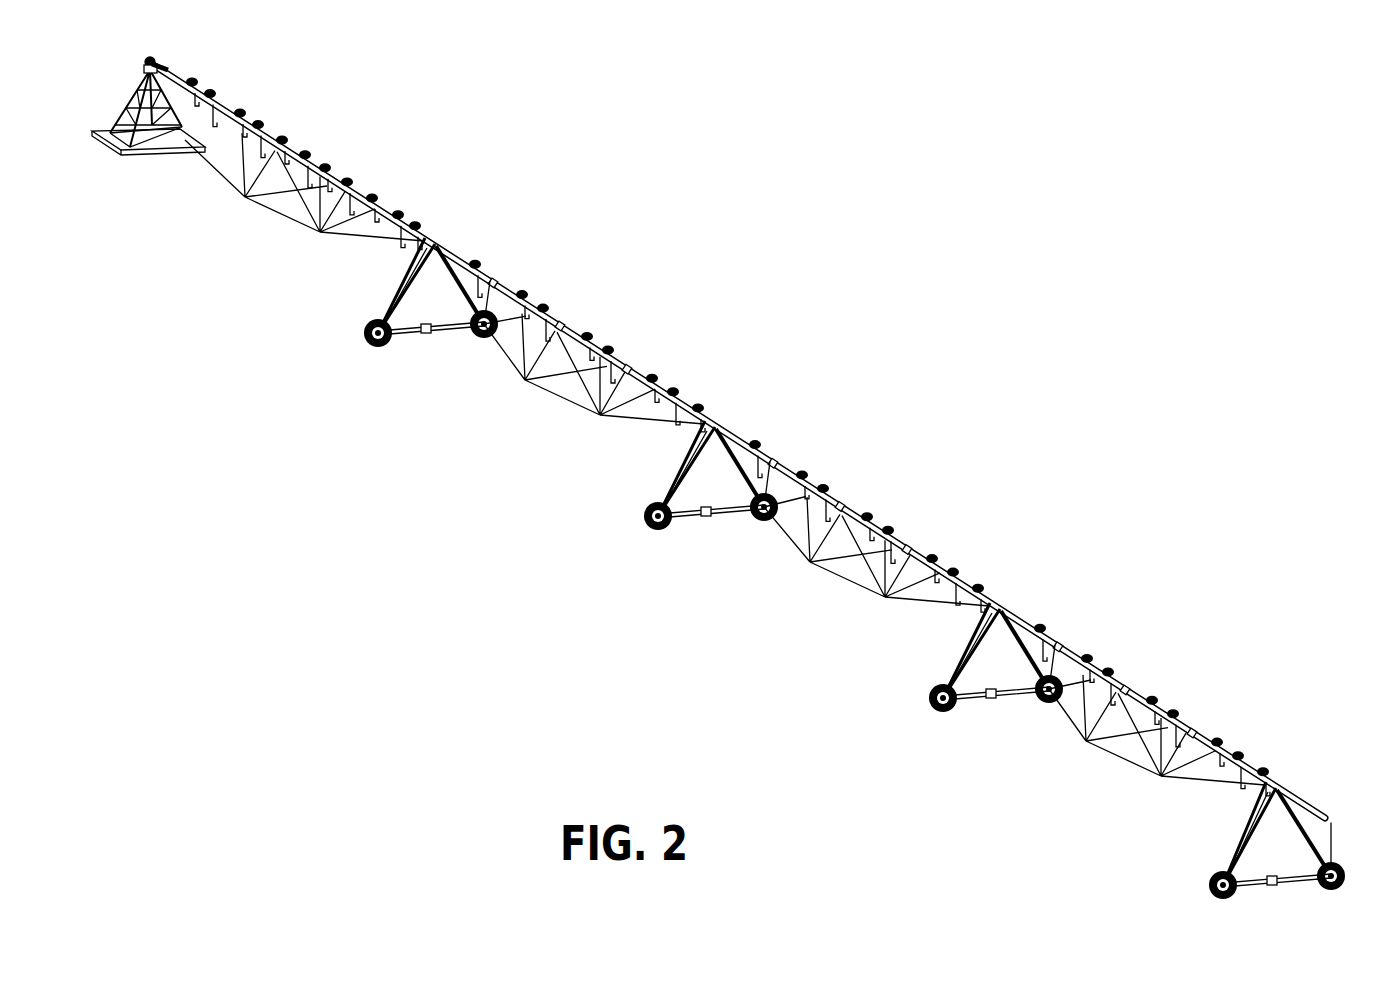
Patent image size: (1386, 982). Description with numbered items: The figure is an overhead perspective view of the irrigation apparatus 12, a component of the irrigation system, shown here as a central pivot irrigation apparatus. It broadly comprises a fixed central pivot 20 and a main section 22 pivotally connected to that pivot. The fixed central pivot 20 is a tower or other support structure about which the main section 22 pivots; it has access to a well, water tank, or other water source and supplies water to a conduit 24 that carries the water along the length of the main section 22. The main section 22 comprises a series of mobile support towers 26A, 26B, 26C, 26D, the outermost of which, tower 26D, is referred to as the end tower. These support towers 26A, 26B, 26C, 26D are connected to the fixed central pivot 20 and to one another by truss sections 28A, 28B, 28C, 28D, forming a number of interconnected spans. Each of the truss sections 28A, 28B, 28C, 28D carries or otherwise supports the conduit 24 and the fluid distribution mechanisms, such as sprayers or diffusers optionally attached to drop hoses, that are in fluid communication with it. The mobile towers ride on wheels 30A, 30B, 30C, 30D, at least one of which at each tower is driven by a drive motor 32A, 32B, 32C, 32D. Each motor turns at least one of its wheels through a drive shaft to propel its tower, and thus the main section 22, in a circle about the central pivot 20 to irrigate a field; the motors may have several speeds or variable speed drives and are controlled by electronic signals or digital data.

The irrigation apparatus 12 is at (852, 300).
The fixed central pivot 20 is at (122, 168).
The main section 22 is at (377, 150).
The conduit 24 is at (165, 66).
The mobile support tower 26A is at (437, 222).
The mobile support tower 26B is at (717, 405).
The mobile support tower 26C is at (1002, 587).
The end tower 26D is at (1295, 745).
The truss section 28A is at (283, 224).
The truss section 28B is at (540, 405).
The truss section 28C is at (832, 585).
The truss section 28D is at (1115, 778).
The wheel 30A is at (364, 336).
The wheel 30B is at (644, 519).
The wheel 30C is at (929, 701).
The wheel 30D is at (1207, 881).
The drive motor 32A is at (431, 335).
The drive motor 32B is at (711, 518).
The drive motor 32C is at (996, 700).
The drive motor 32D is at (1274, 880).